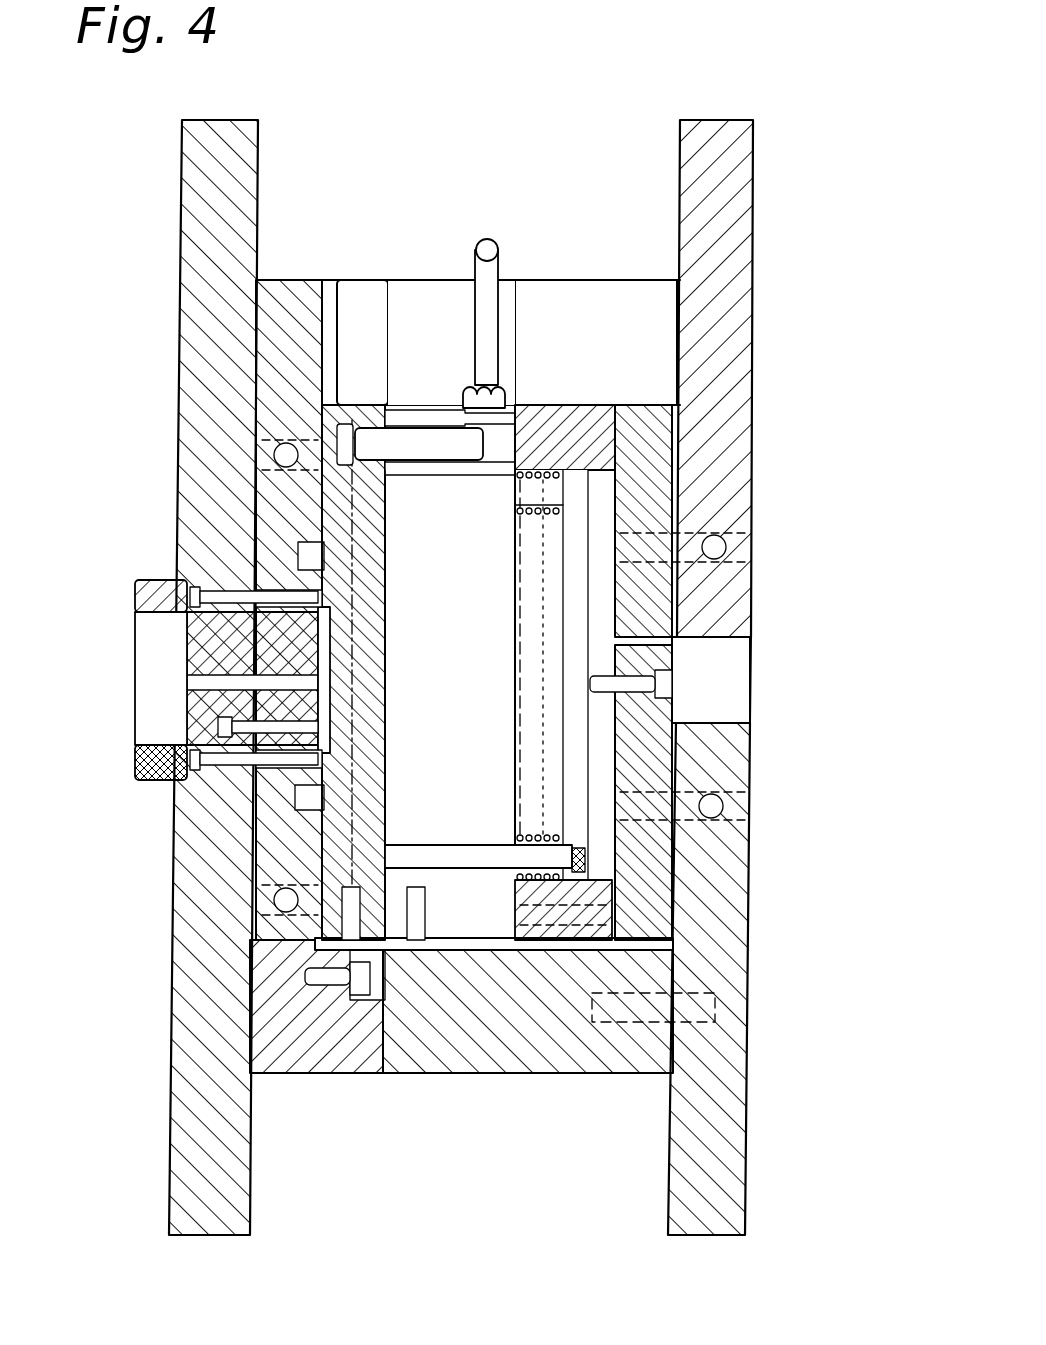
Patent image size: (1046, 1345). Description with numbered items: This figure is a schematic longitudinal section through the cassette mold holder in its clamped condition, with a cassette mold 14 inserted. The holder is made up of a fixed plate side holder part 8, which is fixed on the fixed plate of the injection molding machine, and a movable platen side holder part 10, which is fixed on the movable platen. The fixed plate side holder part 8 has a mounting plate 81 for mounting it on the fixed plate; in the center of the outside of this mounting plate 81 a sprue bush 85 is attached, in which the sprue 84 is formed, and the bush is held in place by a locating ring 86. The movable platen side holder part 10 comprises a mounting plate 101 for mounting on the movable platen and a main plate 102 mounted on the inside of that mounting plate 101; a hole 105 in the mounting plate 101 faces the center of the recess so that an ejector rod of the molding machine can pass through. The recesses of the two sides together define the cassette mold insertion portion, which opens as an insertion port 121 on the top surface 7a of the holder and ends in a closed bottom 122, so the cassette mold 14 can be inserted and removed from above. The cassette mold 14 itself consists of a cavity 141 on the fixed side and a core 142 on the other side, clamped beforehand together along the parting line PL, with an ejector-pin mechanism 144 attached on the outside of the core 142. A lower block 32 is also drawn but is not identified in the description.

The fixed plate side holder part 8 is at (472, 701).
The top surface 7a is at (296, 280).
The movable platen side holder part 10 is at (770, 1172).
The cassette mold 14 is at (505, 333).
The parting line PL is at (390, 297).
The lower left block 32 is at (290, 1055).
The mounting plate 81 is at (148, 1137).
The sprue 84 is at (215, 680).
The sprue bush 85 is at (150, 728).
The locating ring 86 is at (160, 762).
The mounting plate 101 is at (722, 1070).
The main plate 102 is at (595, 1080).
The hole 105 is at (703, 660).
The insertion port 121 is at (365, 290).
The bottom 122 is at (457, 389).
The cavity 141 is at (370, 407).
The core 142 is at (518, 402).
The ejector-pin mechanism 144 is at (582, 520).